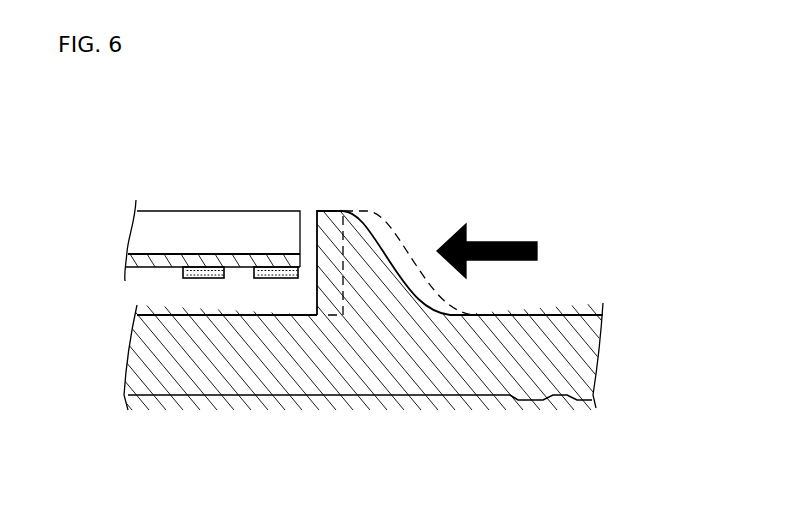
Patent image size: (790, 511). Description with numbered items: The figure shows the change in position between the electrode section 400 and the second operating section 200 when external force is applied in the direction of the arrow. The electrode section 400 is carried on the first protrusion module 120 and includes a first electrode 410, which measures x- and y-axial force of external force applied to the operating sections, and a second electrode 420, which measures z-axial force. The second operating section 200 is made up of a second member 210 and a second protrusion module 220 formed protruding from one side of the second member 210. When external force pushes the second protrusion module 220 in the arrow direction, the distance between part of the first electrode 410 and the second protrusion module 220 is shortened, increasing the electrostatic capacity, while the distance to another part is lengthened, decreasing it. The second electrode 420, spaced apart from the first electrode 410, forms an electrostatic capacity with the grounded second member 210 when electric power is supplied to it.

The first protrusion module 120 is at (162, 209).
The electrode section 400 is at (240, 198).
The first electrode 410 is at (269, 274).
The second electrode 420 is at (199, 274).
The second operating section 200 is at (389, 253).
The second member 210 is at (515, 315).
The second protrusion module 220 is at (472, 133).